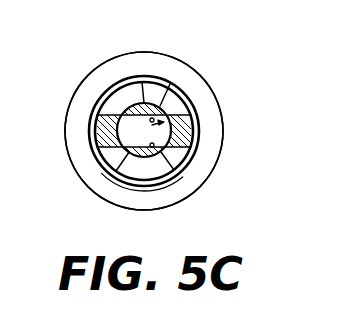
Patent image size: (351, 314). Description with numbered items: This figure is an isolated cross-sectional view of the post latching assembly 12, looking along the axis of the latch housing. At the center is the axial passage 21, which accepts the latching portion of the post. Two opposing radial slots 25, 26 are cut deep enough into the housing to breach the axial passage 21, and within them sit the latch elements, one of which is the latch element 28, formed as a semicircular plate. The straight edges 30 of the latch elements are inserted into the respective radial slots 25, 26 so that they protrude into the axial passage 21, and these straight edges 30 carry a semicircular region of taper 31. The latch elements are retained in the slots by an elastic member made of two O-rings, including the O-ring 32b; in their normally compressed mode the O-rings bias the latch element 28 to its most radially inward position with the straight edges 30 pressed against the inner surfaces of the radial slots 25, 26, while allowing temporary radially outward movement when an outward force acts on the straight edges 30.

The latching assembly 12 is at (213, 87).
The axial passage 21 is at (221, 110).
The radial slot 25 is at (97, 98).
The radial slot 26 is at (72, 162).
The latch element 28 is at (140, 157).
The straight edges 30 is at (180, 66).
The region of taper 31 is at (150, 98).
The O-ring 32b is at (165, 170).